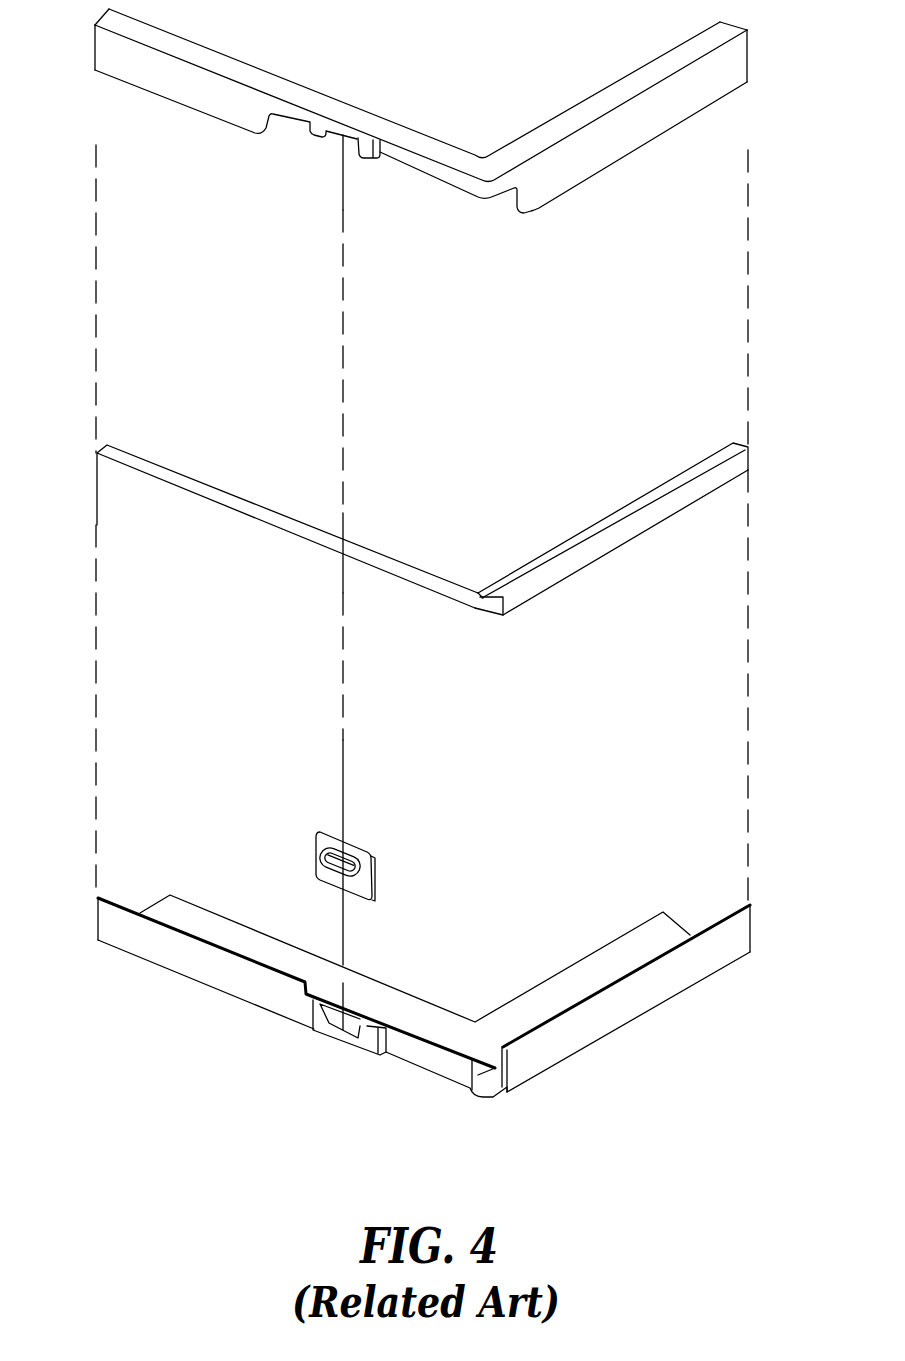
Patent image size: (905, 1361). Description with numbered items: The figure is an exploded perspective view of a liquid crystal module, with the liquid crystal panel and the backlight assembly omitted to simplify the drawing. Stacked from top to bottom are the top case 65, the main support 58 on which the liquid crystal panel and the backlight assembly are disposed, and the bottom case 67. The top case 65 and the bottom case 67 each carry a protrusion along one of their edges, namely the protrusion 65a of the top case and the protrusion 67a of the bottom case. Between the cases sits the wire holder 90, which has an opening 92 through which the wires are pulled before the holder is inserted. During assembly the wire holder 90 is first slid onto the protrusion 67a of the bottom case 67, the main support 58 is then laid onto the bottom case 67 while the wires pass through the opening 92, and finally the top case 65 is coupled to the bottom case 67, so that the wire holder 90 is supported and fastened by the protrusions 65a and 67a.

The top case 65 is at (568, 122).
The protrusion of the top case 65a is at (367, 157).
The main support 58 is at (560, 558).
The bottom case 67 is at (222, 968).
The protrusion of the bottom case 67a is at (368, 1043).
The wire holder 90 is at (360, 850).
The opening of the wire holder 92 is at (317, 850).